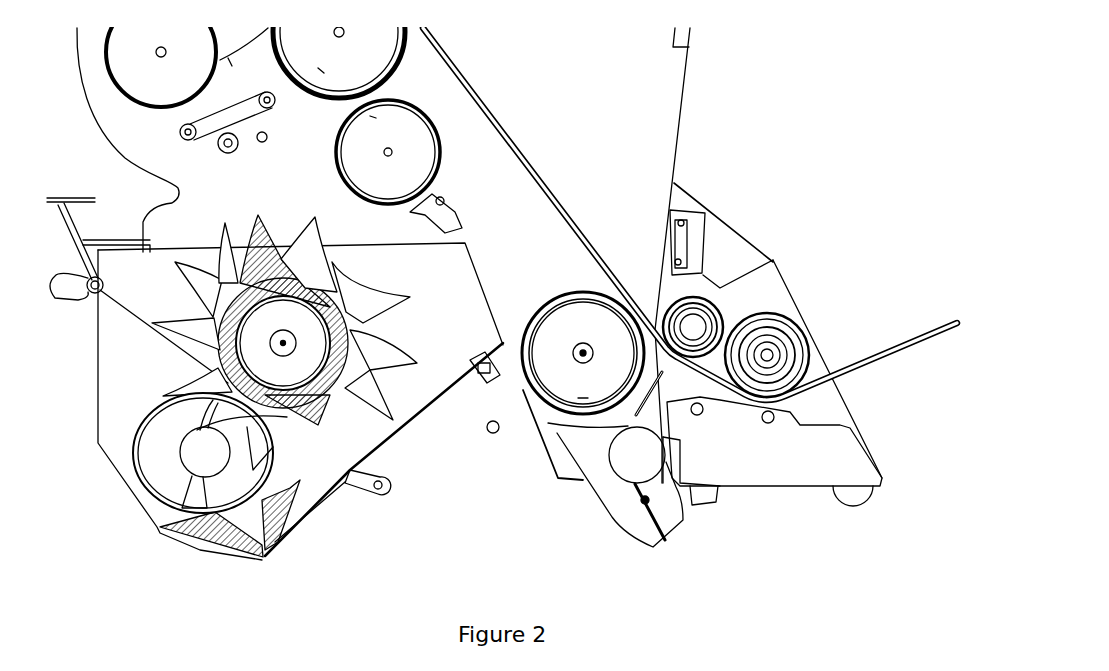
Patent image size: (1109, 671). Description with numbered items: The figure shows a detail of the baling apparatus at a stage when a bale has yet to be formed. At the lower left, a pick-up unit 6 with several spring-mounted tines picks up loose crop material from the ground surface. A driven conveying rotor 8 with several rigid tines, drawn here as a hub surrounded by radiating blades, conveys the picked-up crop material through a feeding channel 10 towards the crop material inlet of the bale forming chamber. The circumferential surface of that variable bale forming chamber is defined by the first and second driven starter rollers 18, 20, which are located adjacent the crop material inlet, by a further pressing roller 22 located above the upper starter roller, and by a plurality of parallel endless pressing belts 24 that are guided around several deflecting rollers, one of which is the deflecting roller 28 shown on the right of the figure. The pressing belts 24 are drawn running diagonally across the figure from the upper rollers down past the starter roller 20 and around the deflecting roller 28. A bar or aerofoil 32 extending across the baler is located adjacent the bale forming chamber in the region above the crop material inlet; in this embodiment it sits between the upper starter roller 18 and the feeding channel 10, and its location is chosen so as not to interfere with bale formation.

The pick-up unit 6 is at (160, 470).
The conveying rotor 8 is at (183, 338).
The feeding channel 10 is at (437, 343).
The first starter roller 18 is at (342, 162).
The second starter roller 20 is at (568, 318).
The further pressing roller 22 is at (372, 50).
The pressing belts 24 is at (560, 200).
The deflecting roller 28 is at (716, 318).
The bar or aerofoil 32 is at (450, 200).